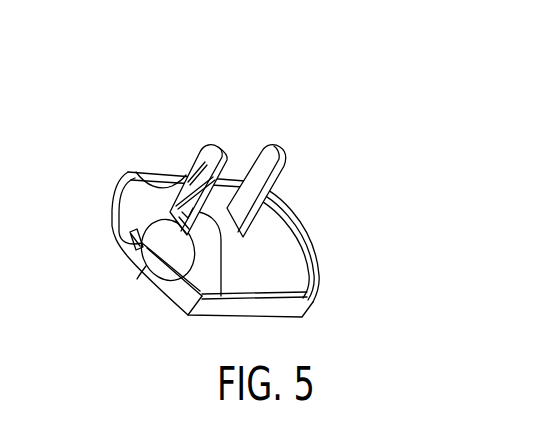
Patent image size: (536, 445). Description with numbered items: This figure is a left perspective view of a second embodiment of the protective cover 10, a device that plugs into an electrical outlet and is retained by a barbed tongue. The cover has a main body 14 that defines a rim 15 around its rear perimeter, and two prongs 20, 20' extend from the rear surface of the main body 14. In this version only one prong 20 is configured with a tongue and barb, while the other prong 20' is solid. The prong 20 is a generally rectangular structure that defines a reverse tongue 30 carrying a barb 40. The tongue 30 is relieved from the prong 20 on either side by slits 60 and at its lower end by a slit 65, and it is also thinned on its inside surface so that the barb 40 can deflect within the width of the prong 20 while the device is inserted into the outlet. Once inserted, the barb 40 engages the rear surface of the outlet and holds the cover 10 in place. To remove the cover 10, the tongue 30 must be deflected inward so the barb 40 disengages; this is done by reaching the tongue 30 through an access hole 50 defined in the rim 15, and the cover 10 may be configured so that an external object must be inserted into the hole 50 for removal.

The protective cover 10 is at (265, 120).
The main body 14 is at (277, 253).
The rim 15 is at (318, 263).
The prong 20 is at (180, 179).
The prong 20' is at (301, 182).
The reverse tongue 30 is at (155, 289).
The barb 40 is at (136, 172).
The access hole 50 is at (122, 233).
The slit 60 is at (131, 173).
The slit 65 is at (137, 279).